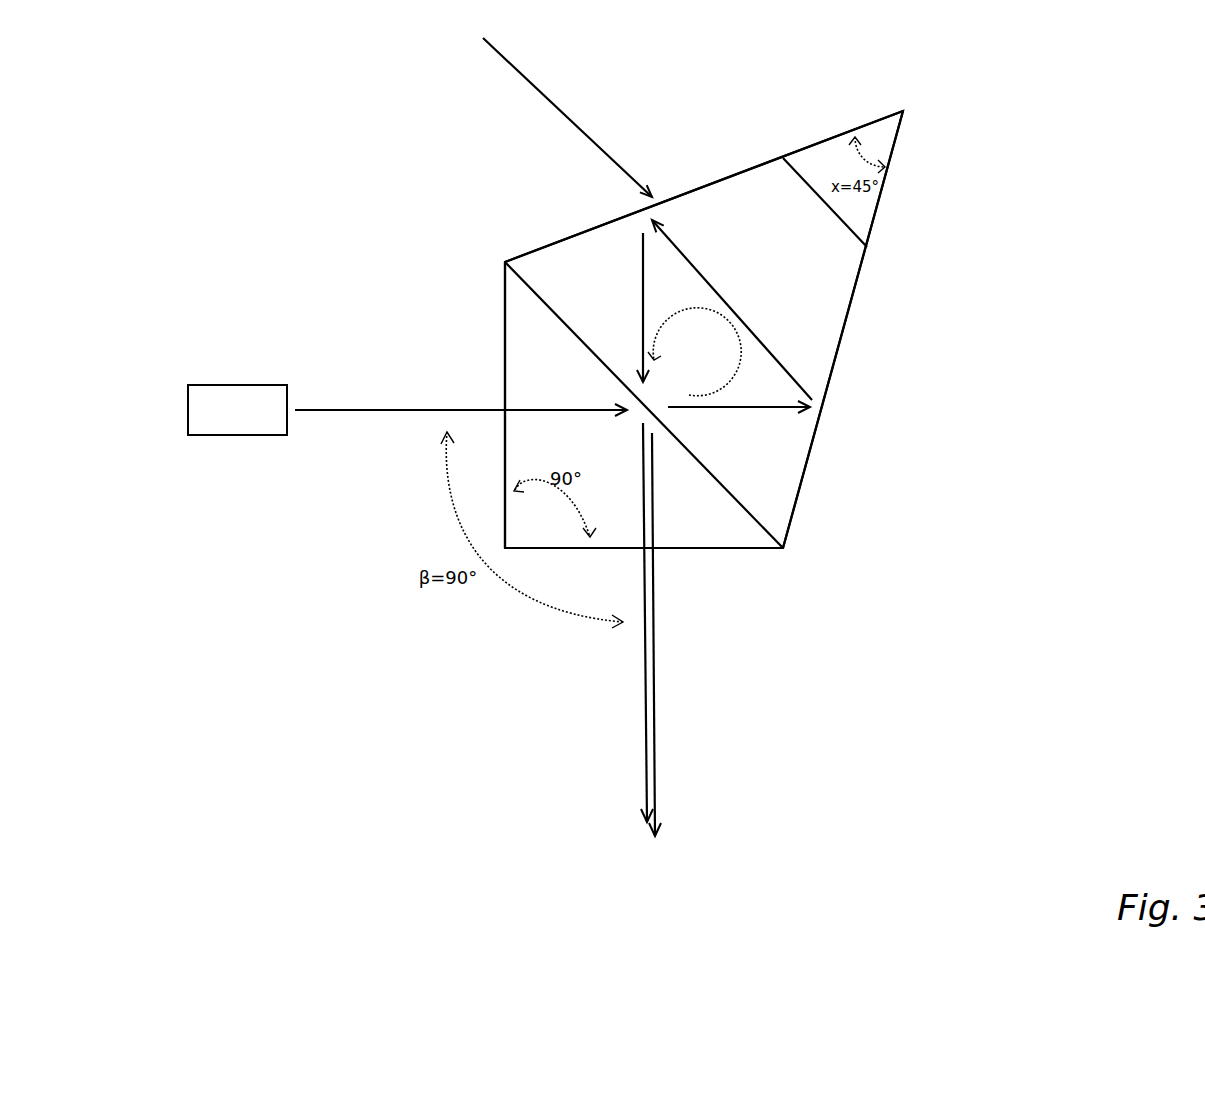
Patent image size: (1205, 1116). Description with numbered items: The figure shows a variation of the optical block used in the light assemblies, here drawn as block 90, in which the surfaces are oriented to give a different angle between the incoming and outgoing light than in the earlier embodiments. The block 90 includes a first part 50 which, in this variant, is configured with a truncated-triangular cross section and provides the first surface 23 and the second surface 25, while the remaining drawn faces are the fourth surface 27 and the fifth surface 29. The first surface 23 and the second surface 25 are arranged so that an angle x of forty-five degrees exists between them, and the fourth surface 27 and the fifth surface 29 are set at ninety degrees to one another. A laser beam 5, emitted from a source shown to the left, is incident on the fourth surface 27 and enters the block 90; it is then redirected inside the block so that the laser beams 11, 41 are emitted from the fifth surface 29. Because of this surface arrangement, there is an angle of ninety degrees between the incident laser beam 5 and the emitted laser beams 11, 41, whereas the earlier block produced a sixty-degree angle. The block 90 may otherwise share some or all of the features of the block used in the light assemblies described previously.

The laser beam 5 is at (342, 410).
The block 90 is at (553, 107).
The first part 50 is at (802, 270).
The second surface 25 is at (573, 237).
The fourth surface 27 is at (507, 313).
The first surface 23 is at (814, 456).
The fifth surface 29 is at (708, 549).
The laser beam 41 is at (648, 683).
The laser beam 11 is at (655, 673).